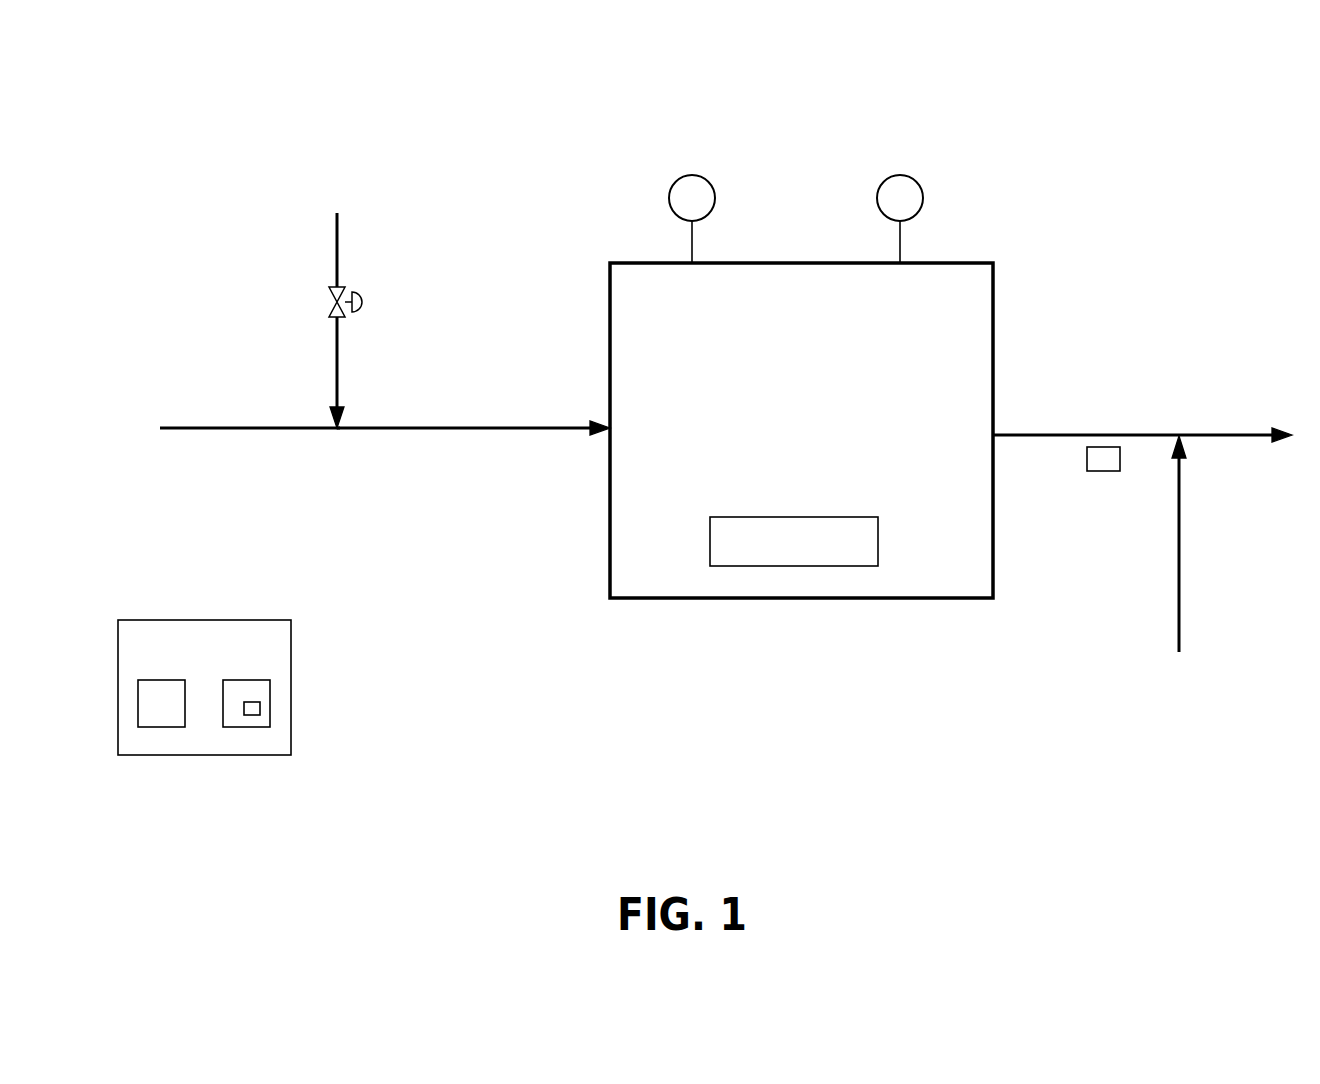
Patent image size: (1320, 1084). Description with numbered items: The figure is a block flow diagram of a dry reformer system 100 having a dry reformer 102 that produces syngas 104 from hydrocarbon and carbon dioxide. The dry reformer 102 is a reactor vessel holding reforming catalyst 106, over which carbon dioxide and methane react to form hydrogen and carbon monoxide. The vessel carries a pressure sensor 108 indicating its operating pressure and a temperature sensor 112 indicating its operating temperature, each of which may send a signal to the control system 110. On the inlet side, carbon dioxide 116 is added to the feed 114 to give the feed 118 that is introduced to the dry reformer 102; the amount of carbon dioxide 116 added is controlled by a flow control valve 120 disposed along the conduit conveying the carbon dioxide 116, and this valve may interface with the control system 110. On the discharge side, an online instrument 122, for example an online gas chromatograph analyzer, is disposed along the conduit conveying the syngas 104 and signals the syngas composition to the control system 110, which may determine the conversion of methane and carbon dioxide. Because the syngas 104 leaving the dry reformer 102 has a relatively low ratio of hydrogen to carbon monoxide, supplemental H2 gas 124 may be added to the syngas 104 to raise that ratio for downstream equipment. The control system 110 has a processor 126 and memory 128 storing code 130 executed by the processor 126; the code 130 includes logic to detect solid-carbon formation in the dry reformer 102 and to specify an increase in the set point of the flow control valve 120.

The dry reformer system 100 is at (715, 864).
The dry reformer 102 is at (640, 263).
The syngas 104 is at (1035, 435).
The reforming catalyst 106 is at (788, 543).
The pressure sensor 108 is at (900, 175).
The control system 110 is at (291, 680).
The temperature sensor 112 is at (692, 175).
The feed 114 is at (247, 428).
The carbon dioxide 116 is at (337, 250).
The feed 118 is at (503, 430).
The flow control valve 120 is at (364, 302).
The online instrument 122 is at (1103, 472).
The supplemental H2 gas 124 is at (1181, 577).
The processor 126 is at (160, 680).
The memory 128 is at (233, 727).
The code 130 is at (252, 716).